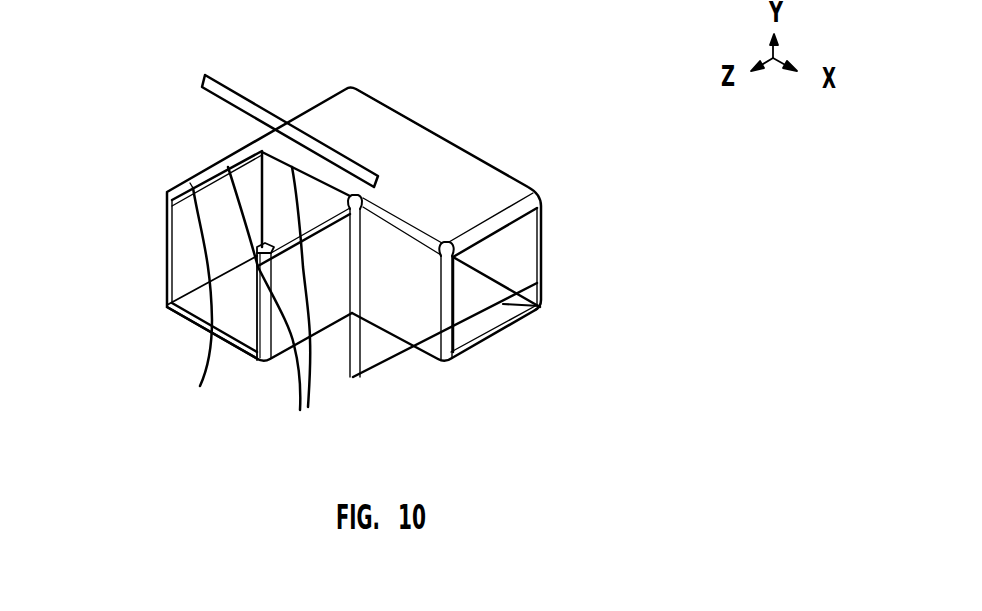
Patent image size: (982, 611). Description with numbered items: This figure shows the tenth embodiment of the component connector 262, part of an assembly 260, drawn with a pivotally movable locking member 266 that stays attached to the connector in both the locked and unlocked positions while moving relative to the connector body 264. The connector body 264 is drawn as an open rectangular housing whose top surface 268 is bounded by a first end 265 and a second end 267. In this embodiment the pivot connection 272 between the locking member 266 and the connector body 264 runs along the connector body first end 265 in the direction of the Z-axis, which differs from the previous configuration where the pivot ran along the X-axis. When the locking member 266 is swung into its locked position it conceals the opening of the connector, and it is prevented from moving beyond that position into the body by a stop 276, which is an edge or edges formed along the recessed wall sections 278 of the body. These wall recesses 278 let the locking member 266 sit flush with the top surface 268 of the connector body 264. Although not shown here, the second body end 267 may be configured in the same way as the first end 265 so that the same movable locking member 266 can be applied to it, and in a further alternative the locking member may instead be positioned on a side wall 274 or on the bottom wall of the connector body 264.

The filter assembly 260 is at (320, 342).
The component connector 262 is at (457, 119).
The connector body 264 is at (363, 253).
The connector body first end 265 is at (190, 303).
The locking member 266 is at (310, 132).
The second body end 267 is at (540, 307).
The top surface 268 is at (488, 203).
The pivot connection 272 is at (362, 152).
The side wall 274 is at (330, 283).
The stop 276 is at (196, 306).
The recessed wall sections 278 is at (273, 309).